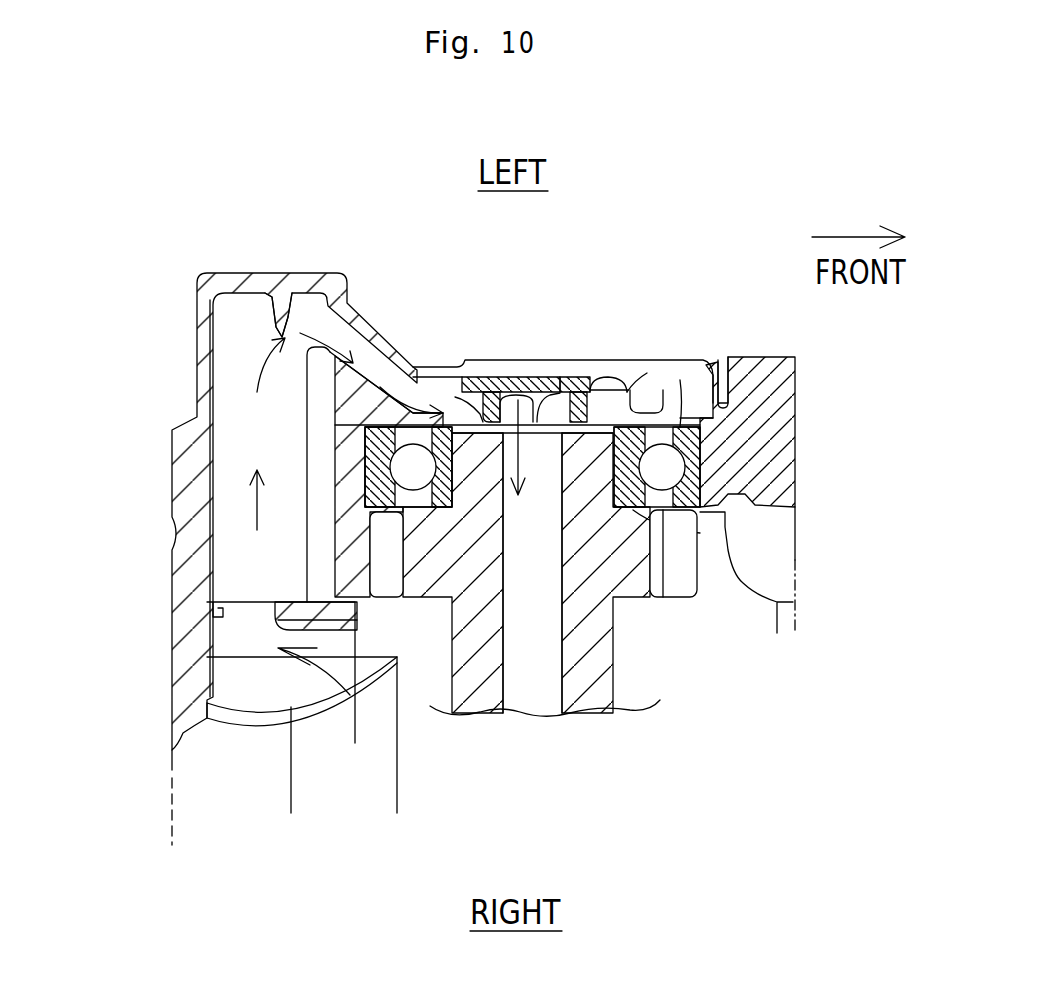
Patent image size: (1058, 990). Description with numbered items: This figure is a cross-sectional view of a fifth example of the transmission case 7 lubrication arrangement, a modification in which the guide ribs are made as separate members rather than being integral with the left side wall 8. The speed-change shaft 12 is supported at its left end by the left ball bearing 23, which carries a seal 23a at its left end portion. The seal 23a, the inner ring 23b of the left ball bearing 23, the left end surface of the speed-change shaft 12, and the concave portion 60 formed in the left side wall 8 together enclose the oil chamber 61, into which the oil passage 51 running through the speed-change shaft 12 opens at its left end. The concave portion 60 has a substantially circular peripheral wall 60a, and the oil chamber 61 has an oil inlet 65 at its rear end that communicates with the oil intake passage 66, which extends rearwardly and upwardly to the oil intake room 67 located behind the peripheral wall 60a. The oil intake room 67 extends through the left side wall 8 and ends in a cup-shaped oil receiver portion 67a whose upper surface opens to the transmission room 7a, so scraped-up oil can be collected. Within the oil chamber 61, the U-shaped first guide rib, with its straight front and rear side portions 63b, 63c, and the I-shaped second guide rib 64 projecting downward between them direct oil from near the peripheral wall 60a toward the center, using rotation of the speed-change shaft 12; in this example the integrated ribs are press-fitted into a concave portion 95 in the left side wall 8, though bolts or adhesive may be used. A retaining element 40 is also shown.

The transmission case 7 is at (279, 224).
The transmission room 7a is at (482, 787).
The left side wall 8 is at (647, 365).
The speed-change shaft 12 is at (600, 692).
The left ball bearing 23 is at (667, 470).
The seal 23a is at (690, 448).
The inner ring 23b is at (690, 531).
The retaining ring 40 is at (667, 577).
The oil passage 51 is at (527, 677).
The concave portion 60 is at (660, 380).
The peripheral wall 60a is at (683, 422).
The oil chamber 61 is at (707, 400).
The front side portion 63b is at (620, 363).
The rear side portion 63c is at (443, 365).
The second guide rib 64 is at (555, 362).
The oil inlet 65 is at (397, 402).
The oil intake passage 66 is at (360, 383).
The oil intake room 67 is at (232, 447).
The oil receiver portion 67a is at (245, 623).
The concave portion 95 is at (530, 360).